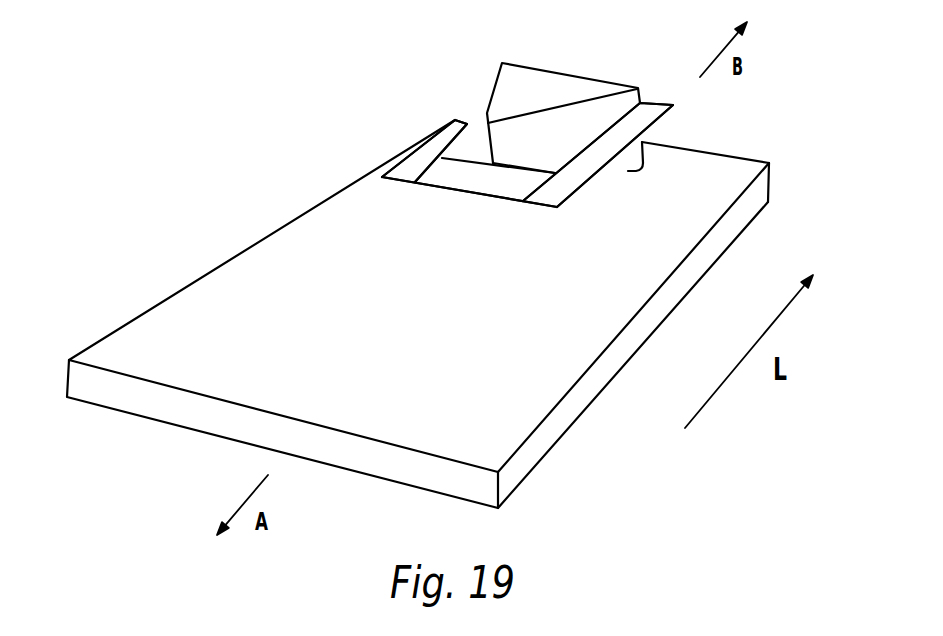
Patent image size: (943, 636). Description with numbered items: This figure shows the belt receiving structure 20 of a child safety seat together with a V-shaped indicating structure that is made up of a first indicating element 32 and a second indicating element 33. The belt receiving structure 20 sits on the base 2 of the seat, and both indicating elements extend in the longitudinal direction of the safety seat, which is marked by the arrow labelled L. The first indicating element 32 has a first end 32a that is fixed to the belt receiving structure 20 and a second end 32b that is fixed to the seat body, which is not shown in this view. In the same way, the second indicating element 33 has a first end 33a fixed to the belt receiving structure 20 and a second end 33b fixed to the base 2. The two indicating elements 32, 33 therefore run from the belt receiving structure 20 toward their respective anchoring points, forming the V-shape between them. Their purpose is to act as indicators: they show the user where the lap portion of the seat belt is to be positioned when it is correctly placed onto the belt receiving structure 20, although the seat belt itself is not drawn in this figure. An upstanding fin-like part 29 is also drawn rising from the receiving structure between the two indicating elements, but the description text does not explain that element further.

The base 2 is at (530, 405).
The belt receiving structure 20 is at (458, 171).
The fin / tab 29 is at (520, 77).
The first indicating element 32 is at (598, 155).
The first end of the first indicating element 32a is at (555, 197).
The second end of the first indicating element 32b is at (664, 117).
The second indicating element 33 is at (443, 146).
The first end of the second indicating element 33a is at (384, 176).
The second end of the second indicating element 33b is at (468, 126).